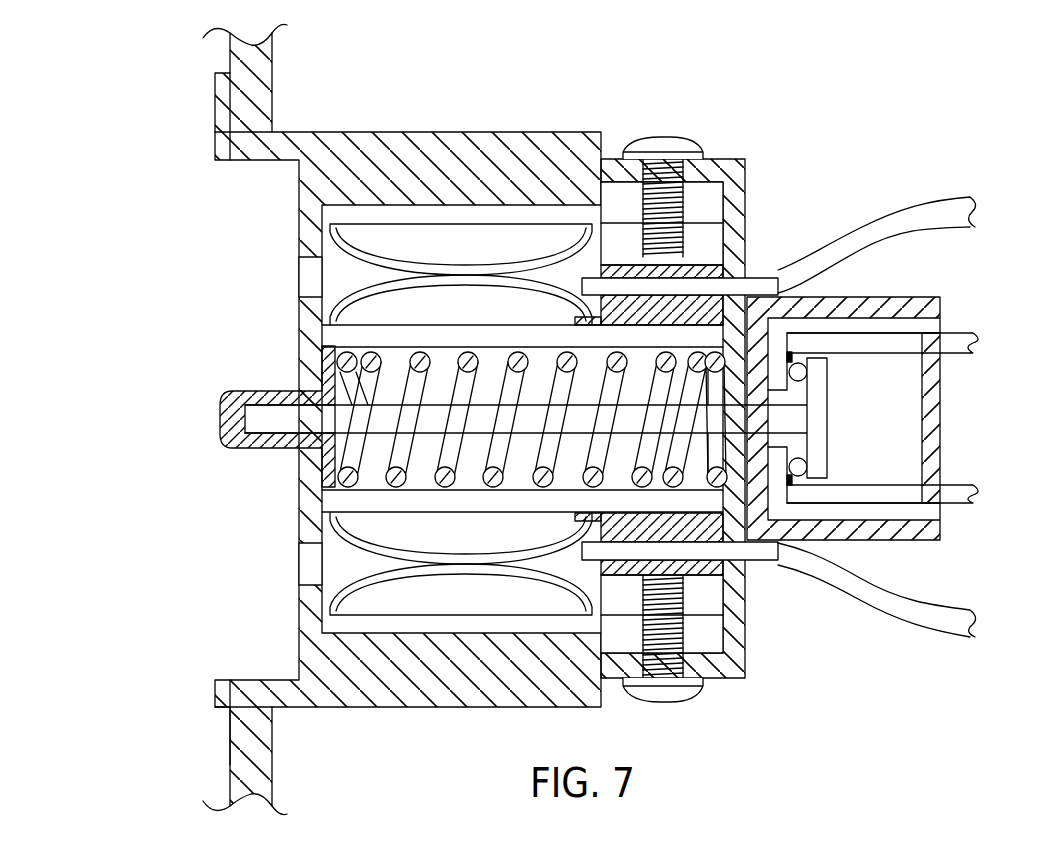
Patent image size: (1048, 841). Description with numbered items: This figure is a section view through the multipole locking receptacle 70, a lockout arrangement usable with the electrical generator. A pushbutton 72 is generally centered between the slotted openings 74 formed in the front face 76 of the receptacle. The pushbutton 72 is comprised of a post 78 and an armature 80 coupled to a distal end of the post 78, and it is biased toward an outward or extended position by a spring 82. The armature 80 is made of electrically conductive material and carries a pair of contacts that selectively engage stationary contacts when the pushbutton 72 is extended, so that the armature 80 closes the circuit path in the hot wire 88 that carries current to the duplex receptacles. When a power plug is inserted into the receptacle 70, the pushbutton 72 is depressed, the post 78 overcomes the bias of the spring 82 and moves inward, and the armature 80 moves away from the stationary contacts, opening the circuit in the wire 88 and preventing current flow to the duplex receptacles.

The multipole locking receptacle 70 is at (157, 250).
The pushbutton 72 is at (220, 404).
The slotted openings 74 is at (305, 276).
The front face 76 is at (388, 133).
The post 78 is at (280, 410).
The armature 80 is at (827, 390).
The spring 82 is at (413, 372).
The hot wire 88 is at (957, 357).